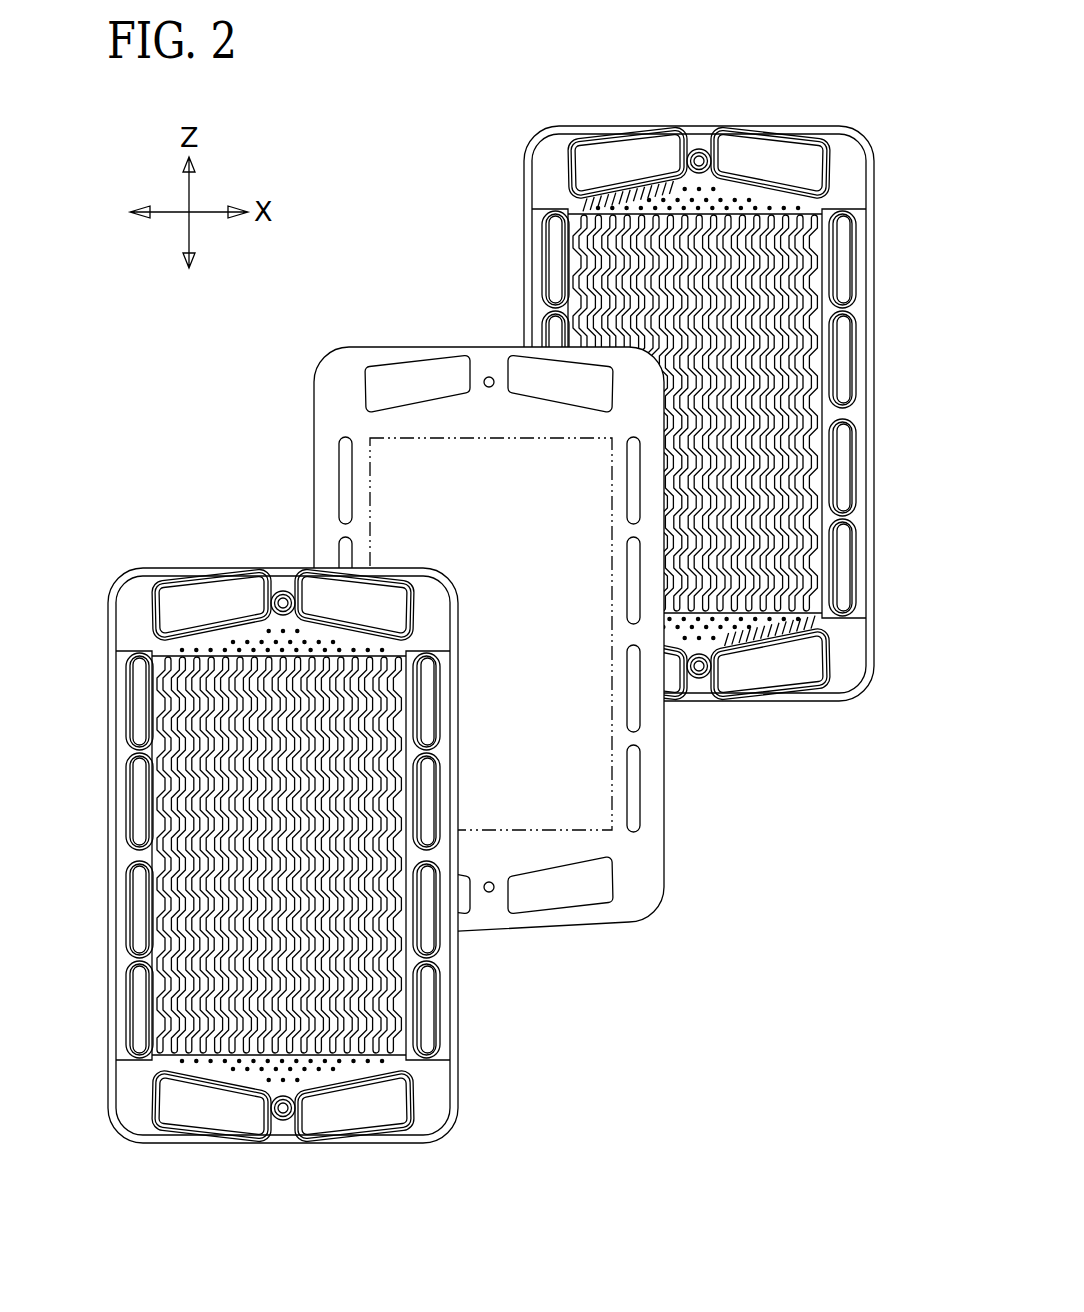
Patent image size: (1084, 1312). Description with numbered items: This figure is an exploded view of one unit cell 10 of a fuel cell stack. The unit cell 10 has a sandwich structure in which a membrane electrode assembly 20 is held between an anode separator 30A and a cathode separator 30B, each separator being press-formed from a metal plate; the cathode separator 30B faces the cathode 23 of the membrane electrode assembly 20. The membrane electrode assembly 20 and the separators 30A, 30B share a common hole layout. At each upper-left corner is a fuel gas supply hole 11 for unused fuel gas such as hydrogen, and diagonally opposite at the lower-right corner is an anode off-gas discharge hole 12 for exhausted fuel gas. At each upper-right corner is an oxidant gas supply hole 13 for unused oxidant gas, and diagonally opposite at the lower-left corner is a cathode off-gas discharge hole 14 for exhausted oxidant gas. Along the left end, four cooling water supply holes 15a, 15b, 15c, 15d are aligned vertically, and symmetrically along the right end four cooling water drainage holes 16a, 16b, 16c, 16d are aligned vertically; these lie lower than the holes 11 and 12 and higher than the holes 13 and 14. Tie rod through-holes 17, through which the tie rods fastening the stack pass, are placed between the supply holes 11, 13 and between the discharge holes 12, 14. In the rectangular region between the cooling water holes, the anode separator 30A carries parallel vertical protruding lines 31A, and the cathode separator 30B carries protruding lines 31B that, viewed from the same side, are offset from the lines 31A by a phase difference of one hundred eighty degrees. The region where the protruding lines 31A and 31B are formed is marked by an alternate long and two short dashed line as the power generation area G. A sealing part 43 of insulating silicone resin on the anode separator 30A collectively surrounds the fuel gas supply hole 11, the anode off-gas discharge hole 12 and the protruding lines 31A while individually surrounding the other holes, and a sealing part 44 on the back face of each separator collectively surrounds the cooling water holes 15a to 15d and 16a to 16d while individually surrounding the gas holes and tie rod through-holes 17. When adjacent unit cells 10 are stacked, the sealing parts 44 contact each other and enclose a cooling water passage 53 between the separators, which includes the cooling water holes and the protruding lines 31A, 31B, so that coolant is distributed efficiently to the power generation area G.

The unit cell 10 is at (368, 198).
The membrane electrode assembly 20 is at (474, 607).
The cathode 23 is at (317, 379).
The anode separator 30A is at (528, 150).
The cathode separator 30B is at (112, 572).
The fuel gas supply hole 11 is at (628, 150).
The oxidant gas supply hole 13 is at (777, 150).
The anode off-gas discharge hole 12 is at (803, 689).
The cathode off-gas discharge hole 14 is at (679, 702).
The tie rod through-hole 17 is at (697, 150).
The cooling water supply hole 15a is at (553, 255).
The cooling water supply hole 15b is at (550, 328).
The cooling water supply hole 15c is at (137, 912).
The cooling water supply hole 15d is at (137, 1012).
The cooling water drainage hole 16a is at (845, 272).
The cooling water drainage hole 16b is at (845, 368).
The cooling water drainage hole 16c is at (845, 472).
The cooling water drainage hole 16d is at (845, 575).
The protruding lines 31A is at (830, 240).
The protruding lines 31B is at (440, 1058).
The sealing part 43 is at (832, 632).
The sealing part 44 is at (420, 1083).
The cooling water passage 53 is at (153, 822).
The power generation area G is at (622, 842).